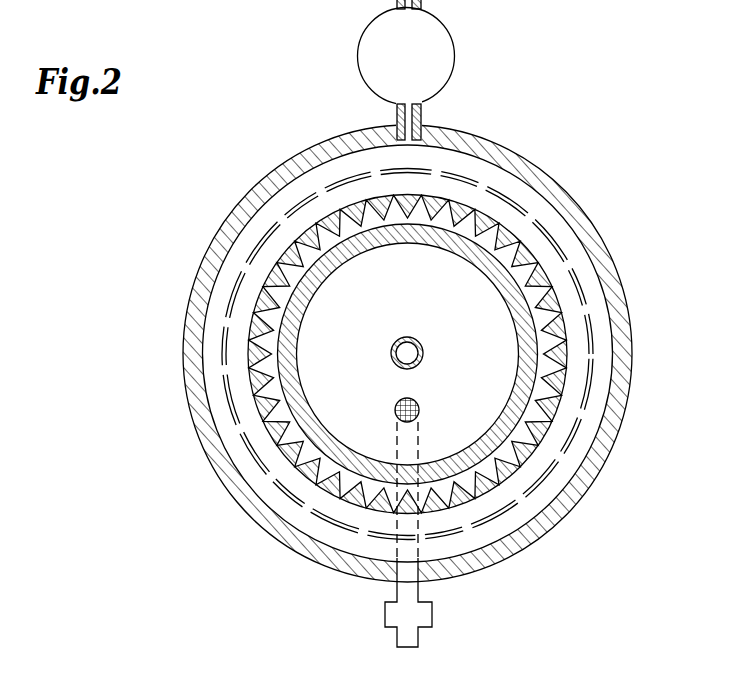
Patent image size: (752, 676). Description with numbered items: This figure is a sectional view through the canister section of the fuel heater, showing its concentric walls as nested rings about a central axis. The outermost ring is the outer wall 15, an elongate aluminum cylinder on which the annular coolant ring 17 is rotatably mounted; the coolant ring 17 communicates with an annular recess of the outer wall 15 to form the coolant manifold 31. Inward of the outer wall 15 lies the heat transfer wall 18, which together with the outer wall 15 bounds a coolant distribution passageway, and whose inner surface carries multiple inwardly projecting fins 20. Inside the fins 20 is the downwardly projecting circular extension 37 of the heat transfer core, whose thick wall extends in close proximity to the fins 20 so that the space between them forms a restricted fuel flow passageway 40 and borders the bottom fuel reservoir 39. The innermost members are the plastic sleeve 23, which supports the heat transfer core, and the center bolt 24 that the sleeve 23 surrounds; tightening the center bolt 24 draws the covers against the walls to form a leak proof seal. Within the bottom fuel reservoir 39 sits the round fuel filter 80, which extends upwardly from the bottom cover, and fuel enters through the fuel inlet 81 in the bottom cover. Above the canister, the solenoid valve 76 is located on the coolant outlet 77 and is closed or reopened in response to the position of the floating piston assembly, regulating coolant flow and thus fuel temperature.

The outer wall 15 is at (253, 456).
The coolant ring 17 is at (264, 506).
The heat transfer wall 18 is at (362, 484).
The fins 20 is at (350, 500).
The plastic sleeve 23 is at (397, 343).
The center bolt 24 is at (411, 357).
The coolant manifold 31 is at (605, 346).
The downwardly projecting circular extension 37 is at (523, 322).
The bottom fuel reservoir 39 is at (488, 300).
The restricted fuel flow passageway 40 is at (257, 386).
The solenoid valve 76 is at (437, 62).
The coolant outlet 77 is at (421, 115).
The fuel filter 80 is at (419, 407).
The fuel inlet 81 is at (426, 613).